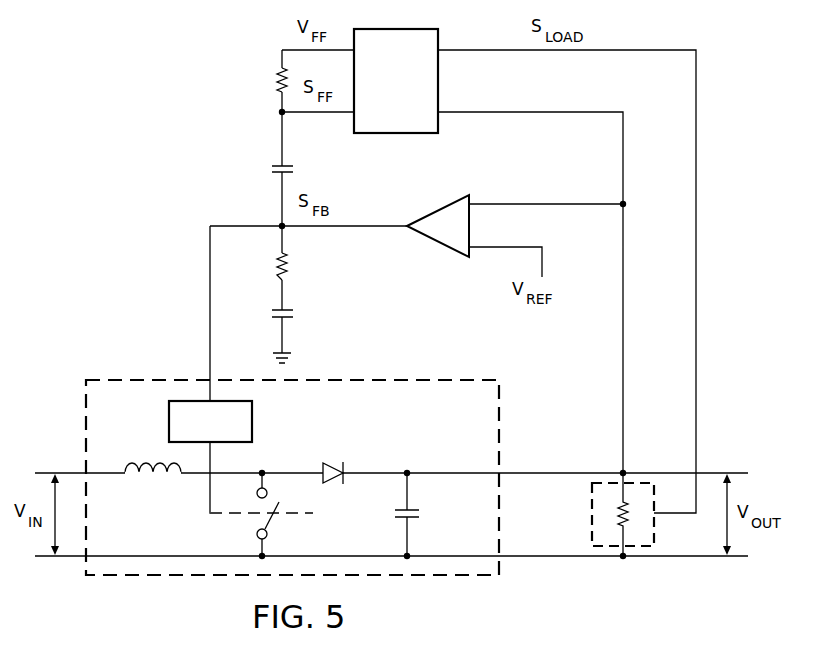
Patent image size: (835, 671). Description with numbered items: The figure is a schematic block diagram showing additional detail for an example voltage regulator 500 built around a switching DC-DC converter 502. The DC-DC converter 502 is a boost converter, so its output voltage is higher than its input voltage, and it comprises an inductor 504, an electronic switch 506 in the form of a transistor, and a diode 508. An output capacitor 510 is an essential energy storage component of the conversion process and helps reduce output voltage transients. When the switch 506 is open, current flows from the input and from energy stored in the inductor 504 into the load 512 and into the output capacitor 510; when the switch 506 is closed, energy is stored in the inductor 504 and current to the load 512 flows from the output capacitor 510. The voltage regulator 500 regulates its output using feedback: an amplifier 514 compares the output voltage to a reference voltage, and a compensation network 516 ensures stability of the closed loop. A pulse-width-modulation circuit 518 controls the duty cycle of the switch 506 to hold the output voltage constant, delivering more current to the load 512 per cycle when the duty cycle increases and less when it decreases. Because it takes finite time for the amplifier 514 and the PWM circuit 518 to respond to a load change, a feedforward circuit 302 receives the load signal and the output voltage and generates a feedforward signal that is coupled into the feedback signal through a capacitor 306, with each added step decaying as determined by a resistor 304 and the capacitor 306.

The voltage regulator 500 is at (130, 81).
The feedforward circuit 302 is at (415, 92).
The resistor 304 is at (277, 80).
The capacitor 306 is at (272, 168).
The amplifier 514 is at (440, 210).
The compensation network 516 is at (318, 316).
The DC-DC converter 502 is at (162, 375).
The pulse-width-modulation circuit 518 is at (169, 420).
The inductor 504 is at (145, 484).
The electronic switch 506 is at (273, 520).
The diode 508 is at (335, 465).
The output capacitor 510 is at (420, 512).
The load 512 is at (583, 508).